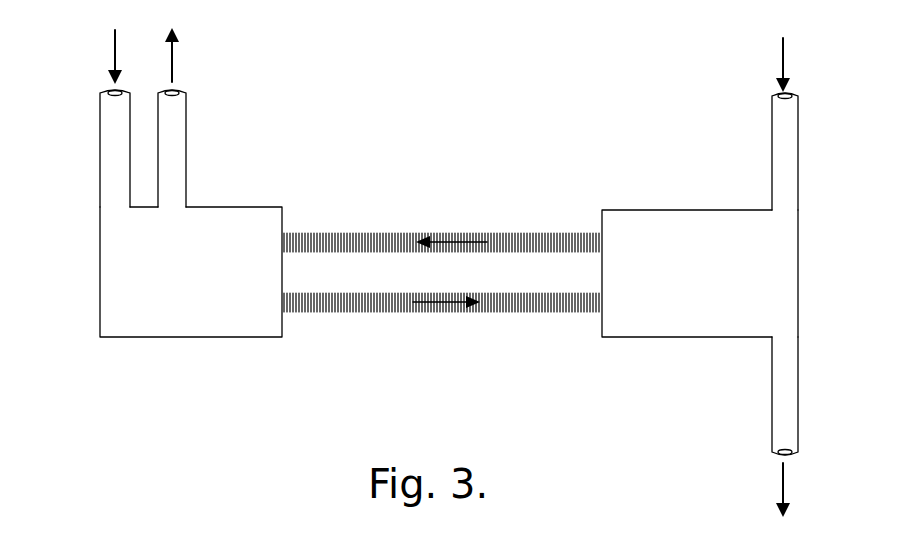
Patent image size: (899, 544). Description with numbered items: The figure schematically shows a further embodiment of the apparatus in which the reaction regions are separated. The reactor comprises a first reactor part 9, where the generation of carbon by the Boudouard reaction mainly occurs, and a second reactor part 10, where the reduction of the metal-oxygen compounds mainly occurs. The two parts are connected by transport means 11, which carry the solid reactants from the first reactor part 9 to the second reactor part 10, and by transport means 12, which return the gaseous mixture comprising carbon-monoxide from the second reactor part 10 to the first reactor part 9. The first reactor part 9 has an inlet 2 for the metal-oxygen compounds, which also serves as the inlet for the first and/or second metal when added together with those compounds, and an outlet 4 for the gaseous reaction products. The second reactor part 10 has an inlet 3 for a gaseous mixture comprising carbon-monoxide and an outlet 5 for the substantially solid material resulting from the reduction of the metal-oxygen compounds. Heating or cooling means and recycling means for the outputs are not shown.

The inlet 2 is at (115, 143).
The inlet 3 is at (785, 158).
The outlet 4 is at (173, 137).
The outlet 5 is at (783, 398).
The first reactor part 9 is at (177, 318).
The second reactor part 10 is at (702, 318).
The transport means 11 is at (348, 303).
The transport means 12 is at (347, 242).